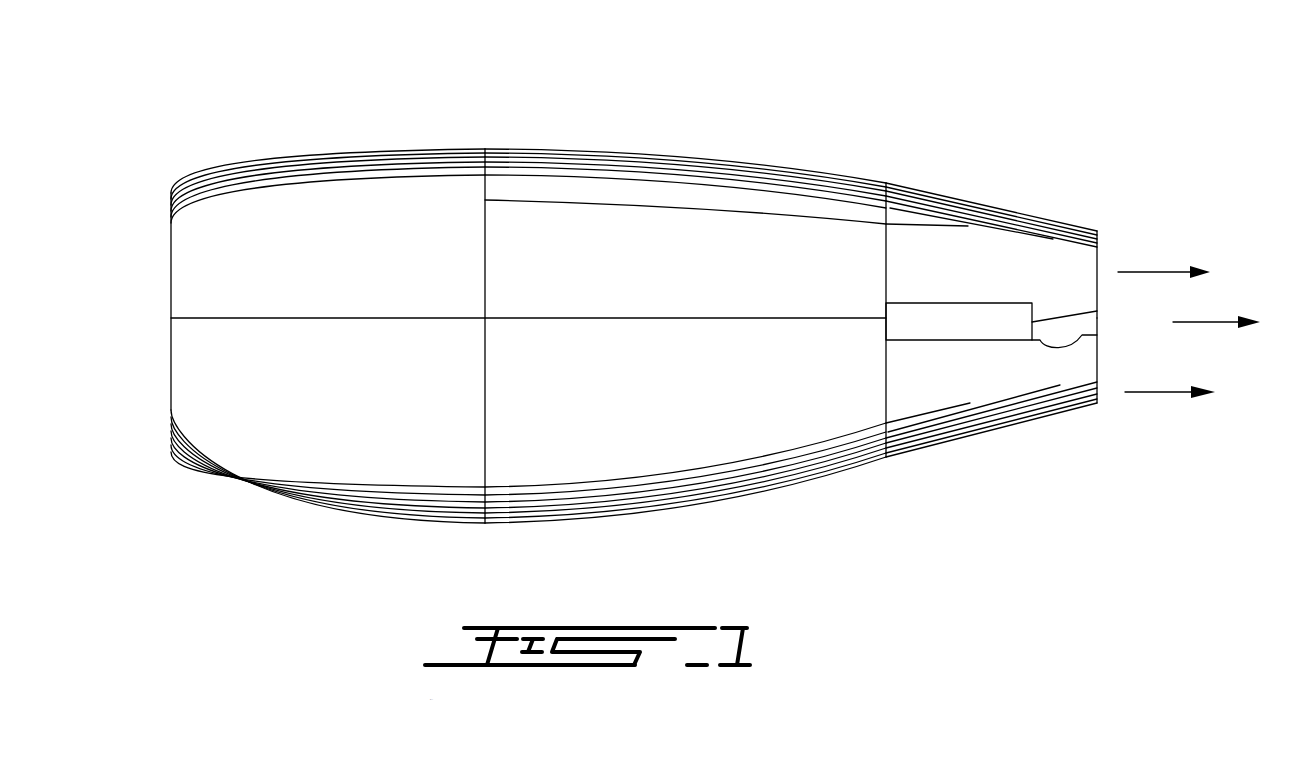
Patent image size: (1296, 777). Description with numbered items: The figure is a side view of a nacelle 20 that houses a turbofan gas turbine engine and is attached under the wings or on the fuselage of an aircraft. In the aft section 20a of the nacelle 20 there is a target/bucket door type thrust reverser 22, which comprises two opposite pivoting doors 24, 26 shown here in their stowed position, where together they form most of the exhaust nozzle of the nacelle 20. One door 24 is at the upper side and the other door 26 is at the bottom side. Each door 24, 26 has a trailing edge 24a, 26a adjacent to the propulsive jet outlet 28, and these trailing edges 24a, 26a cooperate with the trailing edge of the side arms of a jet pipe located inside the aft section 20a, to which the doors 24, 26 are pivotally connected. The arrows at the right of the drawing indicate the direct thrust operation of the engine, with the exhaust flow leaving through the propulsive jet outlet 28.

The nacelle 20 is at (670, 305).
The aft section 20a is at (1089, 280).
The thrust reverser 22 is at (980, 484).
The upper door 24 is at (1070, 247).
The trailing edge of the upper door 24a is at (1098, 248).
The lower door 26 is at (1012, 418).
The trailing edge of the lower door 26a is at (1098, 377).
The propulsive jet outlet 28 is at (1158, 336).